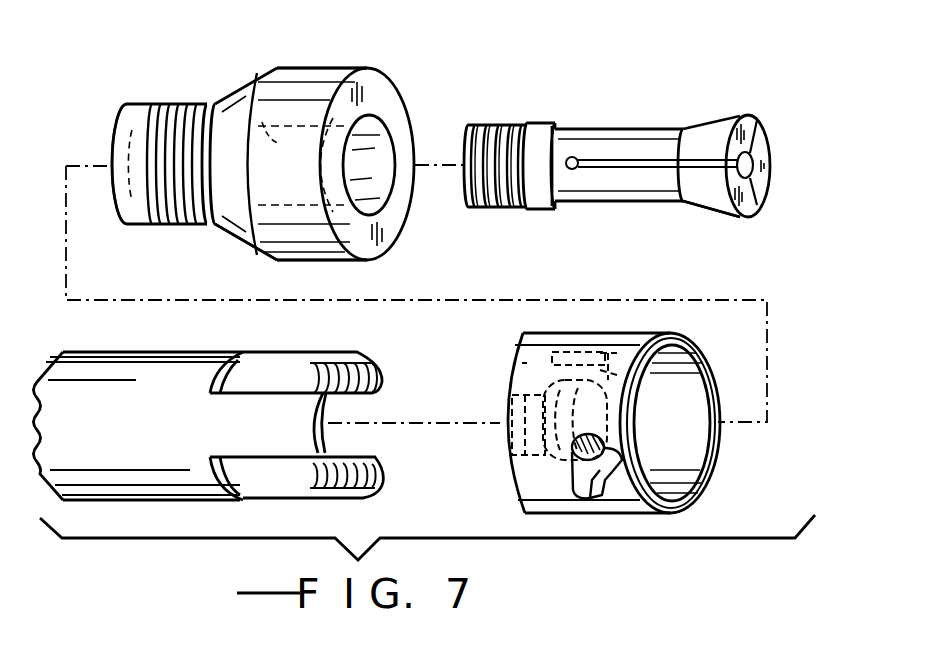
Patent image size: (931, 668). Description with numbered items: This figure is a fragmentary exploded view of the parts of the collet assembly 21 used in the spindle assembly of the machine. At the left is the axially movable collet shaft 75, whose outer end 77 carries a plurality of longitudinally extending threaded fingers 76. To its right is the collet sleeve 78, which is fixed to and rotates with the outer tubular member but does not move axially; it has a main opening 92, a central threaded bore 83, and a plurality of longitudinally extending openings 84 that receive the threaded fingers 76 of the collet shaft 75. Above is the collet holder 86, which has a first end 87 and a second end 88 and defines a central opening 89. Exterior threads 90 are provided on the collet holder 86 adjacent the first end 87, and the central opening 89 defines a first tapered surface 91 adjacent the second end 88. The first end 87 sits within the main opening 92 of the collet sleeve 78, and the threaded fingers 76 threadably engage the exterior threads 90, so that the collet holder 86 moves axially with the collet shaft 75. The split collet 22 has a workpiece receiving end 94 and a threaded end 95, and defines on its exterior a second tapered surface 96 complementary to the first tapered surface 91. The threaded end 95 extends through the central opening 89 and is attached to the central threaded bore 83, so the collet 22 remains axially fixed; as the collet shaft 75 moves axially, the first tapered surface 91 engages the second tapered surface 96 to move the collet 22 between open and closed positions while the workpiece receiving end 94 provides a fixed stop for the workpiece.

The collet assembly 21 is at (338, 68).
The split collet 22 is at (612, 127).
The collet shaft 75 is at (168, 352).
The threaded fingers 76 is at (380, 370).
The outer end 77 is at (330, 443).
The collet sleeve 78 is at (515, 495).
The central threaded bore 83 is at (598, 433).
The longitudinally extending openings 84 is at (627, 326).
The collet holder 86 is at (243, 235).
The first end 87 is at (143, 103).
The second end 88 is at (340, 262).
The central opening 89 is at (293, 70).
The exterior threads 90 is at (192, 104).
The first tapered surface 91 is at (383, 138).
The main opening 92 is at (688, 390).
The workpiece receiving end 94 is at (770, 150).
The threaded end 95 is at (503, 207).
The second tapered surface 96 is at (692, 212).